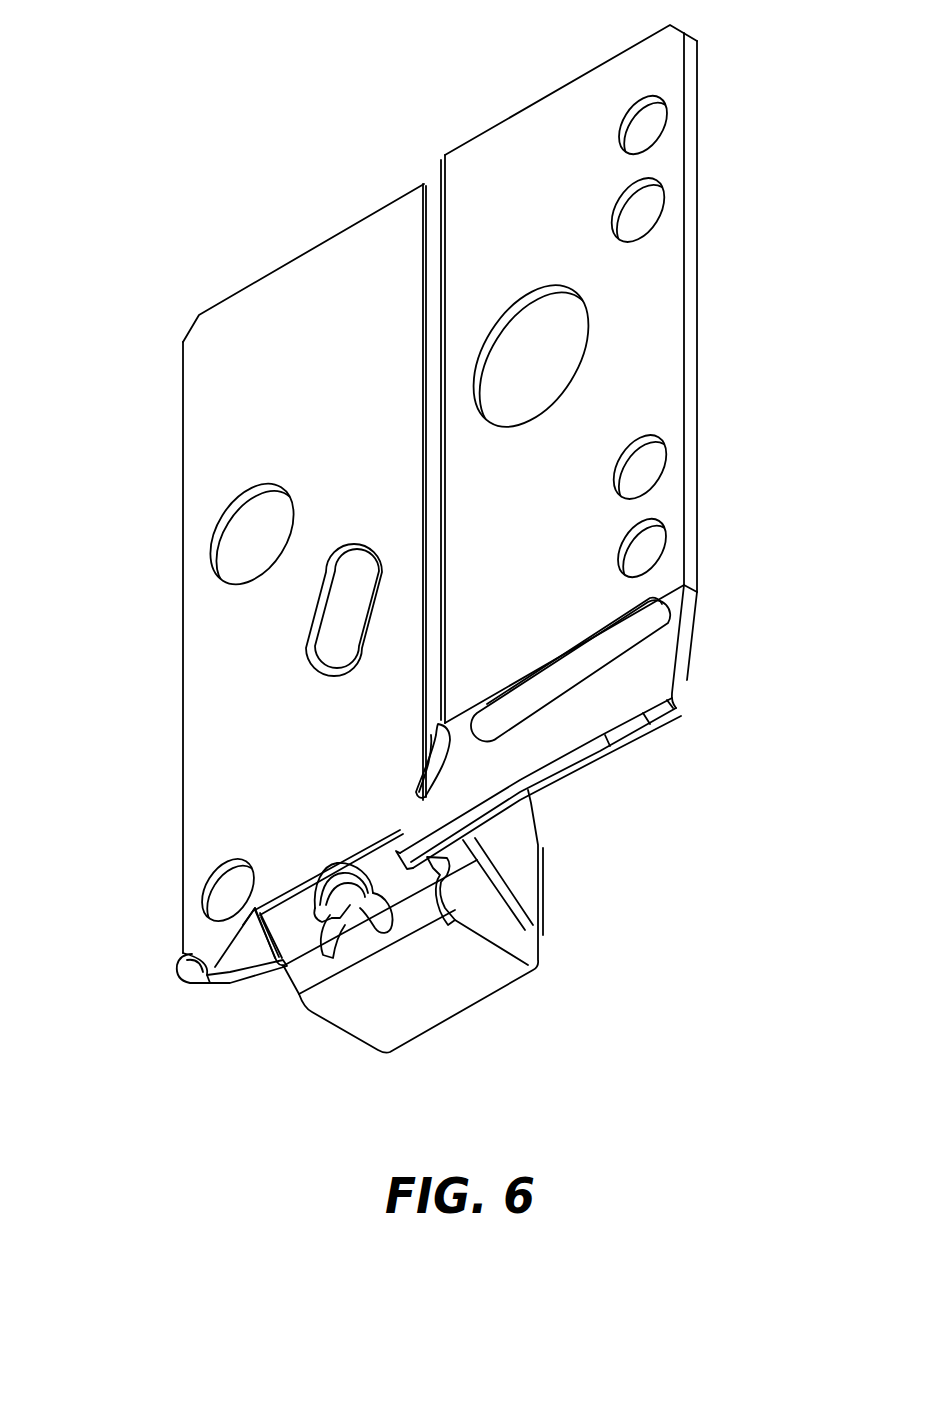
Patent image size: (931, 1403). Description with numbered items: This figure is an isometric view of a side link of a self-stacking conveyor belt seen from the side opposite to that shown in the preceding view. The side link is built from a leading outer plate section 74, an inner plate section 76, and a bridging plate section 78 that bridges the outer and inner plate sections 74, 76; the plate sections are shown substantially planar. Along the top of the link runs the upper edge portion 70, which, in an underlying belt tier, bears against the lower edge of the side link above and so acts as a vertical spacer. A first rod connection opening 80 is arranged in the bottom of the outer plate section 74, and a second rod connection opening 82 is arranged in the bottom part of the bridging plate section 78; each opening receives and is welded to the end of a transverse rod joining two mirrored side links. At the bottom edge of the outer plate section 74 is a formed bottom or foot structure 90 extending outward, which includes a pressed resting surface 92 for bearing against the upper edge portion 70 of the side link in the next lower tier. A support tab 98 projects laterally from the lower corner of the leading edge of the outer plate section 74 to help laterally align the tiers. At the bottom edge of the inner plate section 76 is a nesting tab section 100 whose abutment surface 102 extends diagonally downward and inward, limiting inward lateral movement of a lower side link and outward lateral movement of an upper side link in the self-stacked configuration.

The upper edge portion 70 is at (434, 489).
The leading outer plate section 74 is at (265, 568).
The inner plate section 76 is at (553, 135).
The bridging plate section 78 is at (433, 178).
The first rod connection opening 80 is at (223, 883).
The second rod connection opening 82 is at (440, 770).
The bottom or foot structure 90 is at (321, 939).
The resting surface 92 is at (355, 927).
The support tab 98 is at (180, 975).
The nesting tab section 100 is at (660, 697).
The abutment surface 102 is at (666, 720).